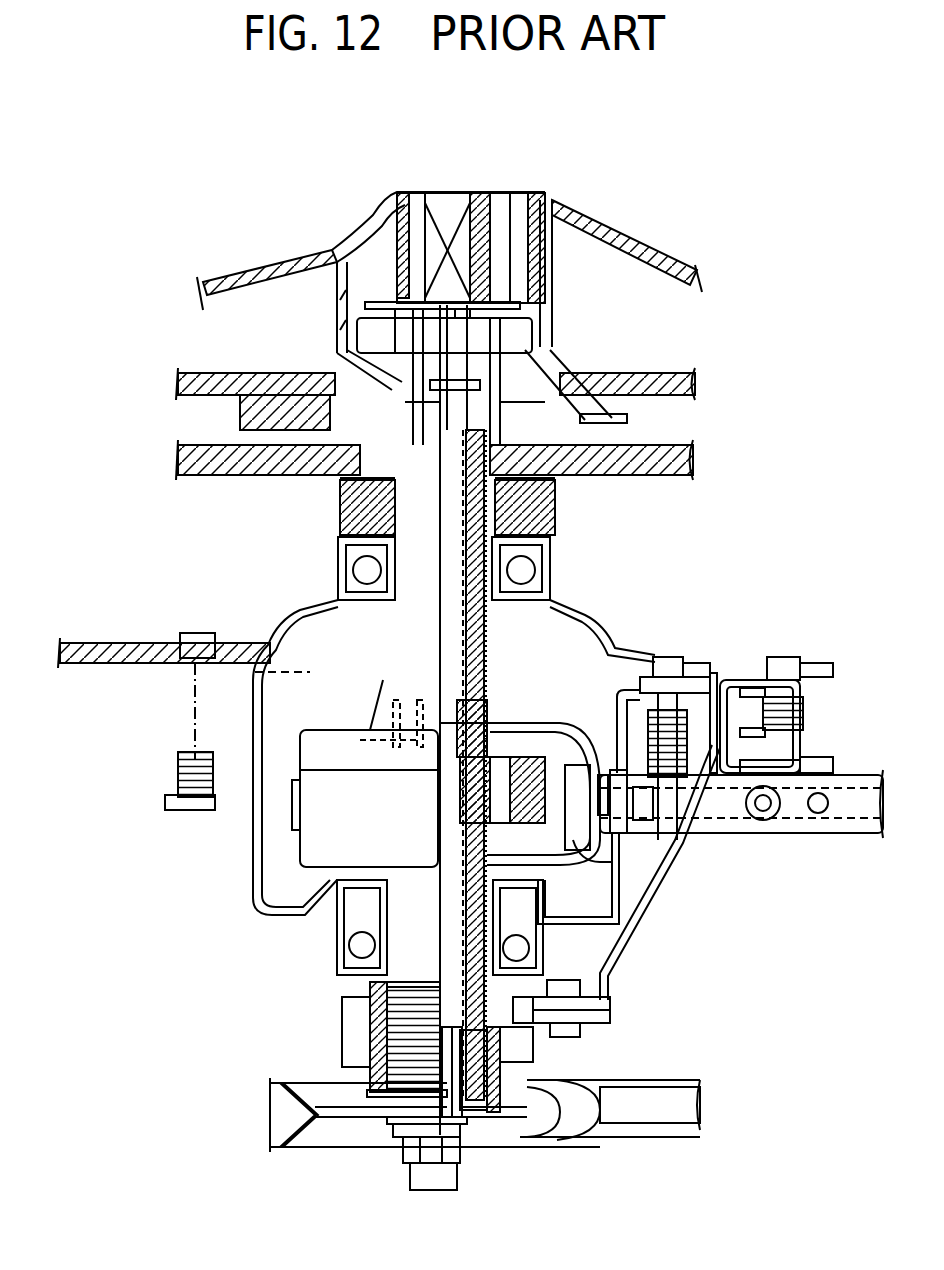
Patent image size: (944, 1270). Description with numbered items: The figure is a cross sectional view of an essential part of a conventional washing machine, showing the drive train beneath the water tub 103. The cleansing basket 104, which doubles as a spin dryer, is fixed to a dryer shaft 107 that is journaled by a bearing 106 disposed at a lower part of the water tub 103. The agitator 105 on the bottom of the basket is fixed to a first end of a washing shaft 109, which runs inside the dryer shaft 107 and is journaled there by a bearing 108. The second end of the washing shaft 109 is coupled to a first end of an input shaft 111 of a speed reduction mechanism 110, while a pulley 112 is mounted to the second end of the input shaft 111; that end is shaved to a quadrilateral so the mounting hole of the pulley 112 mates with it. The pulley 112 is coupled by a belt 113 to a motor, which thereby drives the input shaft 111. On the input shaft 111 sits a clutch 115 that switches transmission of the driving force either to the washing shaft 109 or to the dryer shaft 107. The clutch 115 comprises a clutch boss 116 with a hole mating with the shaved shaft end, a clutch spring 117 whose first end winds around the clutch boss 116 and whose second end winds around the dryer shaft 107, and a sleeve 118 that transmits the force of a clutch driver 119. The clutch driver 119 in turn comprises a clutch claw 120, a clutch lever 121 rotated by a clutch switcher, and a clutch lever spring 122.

The water tub 103 is at (668, 460).
The cleansing basket 104 is at (685, 385).
The agitator 105 is at (668, 258).
The bearing 106 is at (367, 570).
The dryer shaft 107 is at (412, 385).
The bearing 108 is at (480, 650).
The washing shaft 109 is at (455, 330).
The speed reduction mechanism 110 is at (545, 740).
The input shaft 111 is at (450, 895).
The pulley 112 is at (342, 1149).
The belt 113 is at (685, 1095).
The clutch 115 is at (342, 1012).
The clutch boss 116 is at (470, 1087).
The clutch spring 117 is at (370, 1037).
The sleeve 118 is at (520, 1047).
The clutch driver 119 is at (603, 1025).
The clutch claw 120 is at (575, 1008).
The clutch lever 121 is at (670, 878).
The clutch lever spring 122 is at (745, 690).